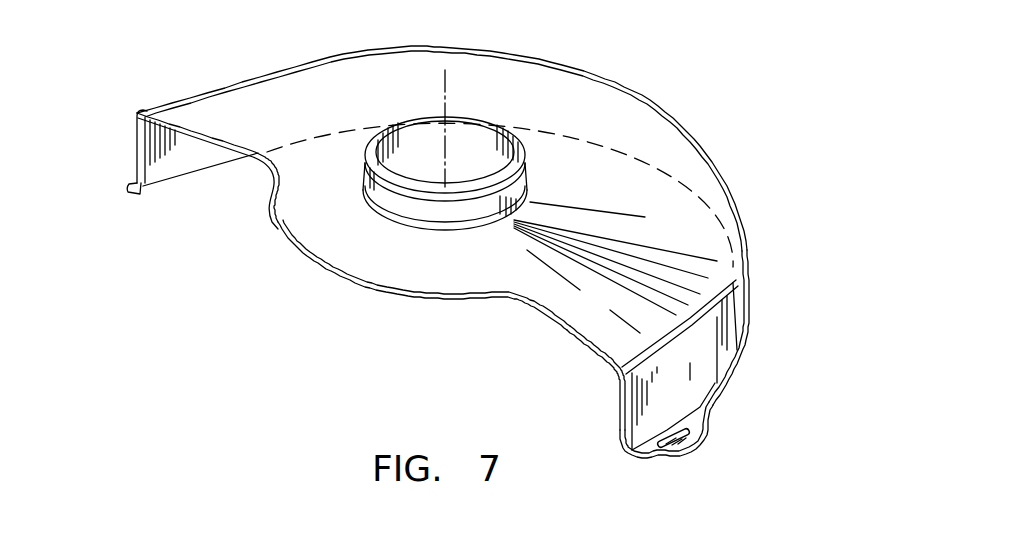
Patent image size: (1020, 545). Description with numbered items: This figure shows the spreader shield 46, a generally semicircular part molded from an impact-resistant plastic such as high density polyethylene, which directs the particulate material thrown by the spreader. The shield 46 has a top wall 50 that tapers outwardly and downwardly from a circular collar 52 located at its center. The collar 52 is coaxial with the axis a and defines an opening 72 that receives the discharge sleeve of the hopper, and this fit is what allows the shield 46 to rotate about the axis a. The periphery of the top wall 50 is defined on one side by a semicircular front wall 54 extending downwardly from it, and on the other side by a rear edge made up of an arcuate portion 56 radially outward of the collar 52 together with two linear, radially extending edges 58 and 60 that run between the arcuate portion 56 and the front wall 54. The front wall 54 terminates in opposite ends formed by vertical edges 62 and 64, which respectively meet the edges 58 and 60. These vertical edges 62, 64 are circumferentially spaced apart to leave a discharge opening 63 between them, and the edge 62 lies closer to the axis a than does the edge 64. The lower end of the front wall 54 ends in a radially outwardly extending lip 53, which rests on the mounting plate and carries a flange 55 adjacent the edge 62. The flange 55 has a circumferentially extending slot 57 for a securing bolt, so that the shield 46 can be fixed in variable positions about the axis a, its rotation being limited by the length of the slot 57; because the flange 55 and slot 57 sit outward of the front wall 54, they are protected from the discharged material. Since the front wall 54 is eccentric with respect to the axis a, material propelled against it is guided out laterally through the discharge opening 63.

The spreader shield 46 is at (690, 106).
The top wall 50 is at (603, 117).
The circular collar 52 is at (390, 197).
The lip 53 is at (740, 363).
The front wall 54 is at (170, 158).
The flange 55 is at (670, 446).
The arcuate portion 56 is at (350, 287).
The slot 57 is at (693, 445).
The linear radially extending edge 58 is at (577, 333).
The linear radially extending edge 60 is at (219, 143).
The vertical edge 62 is at (620, 412).
The discharge opening 63 is at (427, 330).
The vertical edge 64 is at (134, 152).
The opening 72 is at (483, 133).
The axis a is at (448, 92).